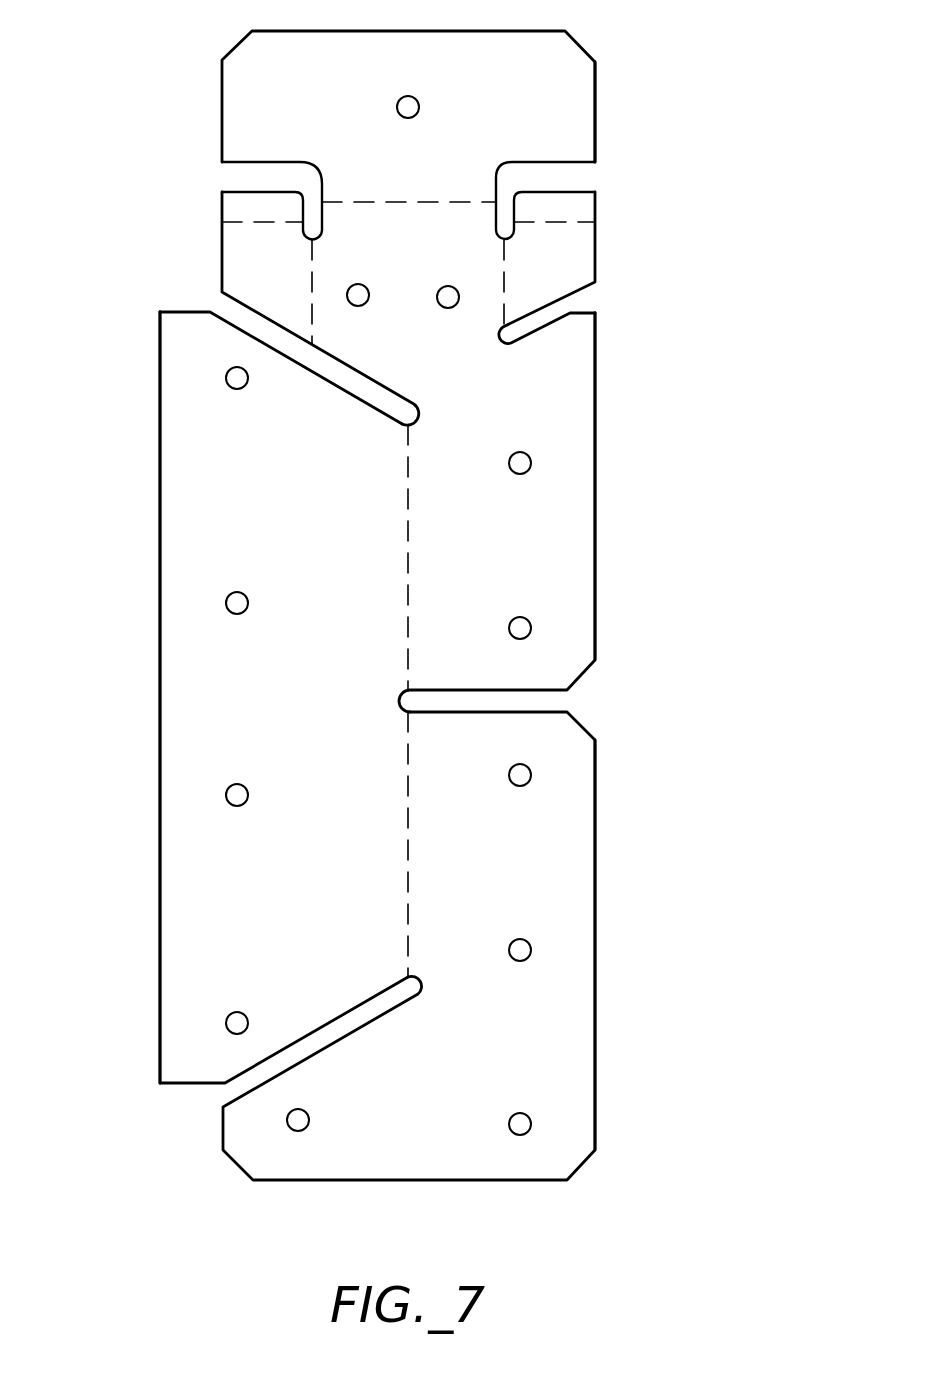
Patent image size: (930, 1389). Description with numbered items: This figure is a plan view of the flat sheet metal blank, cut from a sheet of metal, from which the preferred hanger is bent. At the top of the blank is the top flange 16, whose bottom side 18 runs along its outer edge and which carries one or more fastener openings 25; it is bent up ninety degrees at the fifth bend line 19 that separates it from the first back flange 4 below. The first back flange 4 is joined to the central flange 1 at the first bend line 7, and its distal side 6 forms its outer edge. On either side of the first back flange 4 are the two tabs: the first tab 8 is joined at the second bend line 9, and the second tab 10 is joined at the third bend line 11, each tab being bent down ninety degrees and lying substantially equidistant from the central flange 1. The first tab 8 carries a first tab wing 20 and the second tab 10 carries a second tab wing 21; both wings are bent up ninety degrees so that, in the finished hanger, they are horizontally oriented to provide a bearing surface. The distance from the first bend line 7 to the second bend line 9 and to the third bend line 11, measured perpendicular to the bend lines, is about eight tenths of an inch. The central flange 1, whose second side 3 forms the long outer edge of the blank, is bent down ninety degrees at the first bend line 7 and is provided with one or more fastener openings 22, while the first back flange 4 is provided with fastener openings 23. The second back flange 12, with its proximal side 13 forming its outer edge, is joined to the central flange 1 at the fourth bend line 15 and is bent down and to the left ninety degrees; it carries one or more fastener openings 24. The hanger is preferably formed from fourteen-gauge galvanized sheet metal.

The central flange 1 is at (160, 450).
The second side 3 is at (185, 725).
The first back flange 4 is at (598, 406).
The distal side 6 is at (580, 555).
The first bend line 7 is at (410, 549).
The first tab 8 is at (598, 255).
The second bend line 9 is at (503, 262).
The second tab 10 is at (222, 250).
The third bend line 11 is at (317, 280).
The second back flange 12 is at (598, 818).
The proximal side 13 is at (570, 868).
The fourth bend line 15 is at (410, 848).
The top flange 16 is at (584, 48).
The bottom side 18 is at (575, 107).
The fifth bend line 19 is at (377, 200).
The first tab wing 20 is at (598, 205).
The second tab wing 21 is at (222, 200).
The fastener openings 22 is at (238, 386).
The fastener openings 23 is at (364, 305).
The fastener openings 24 is at (525, 766).
The fastener openings 25 is at (410, 105).